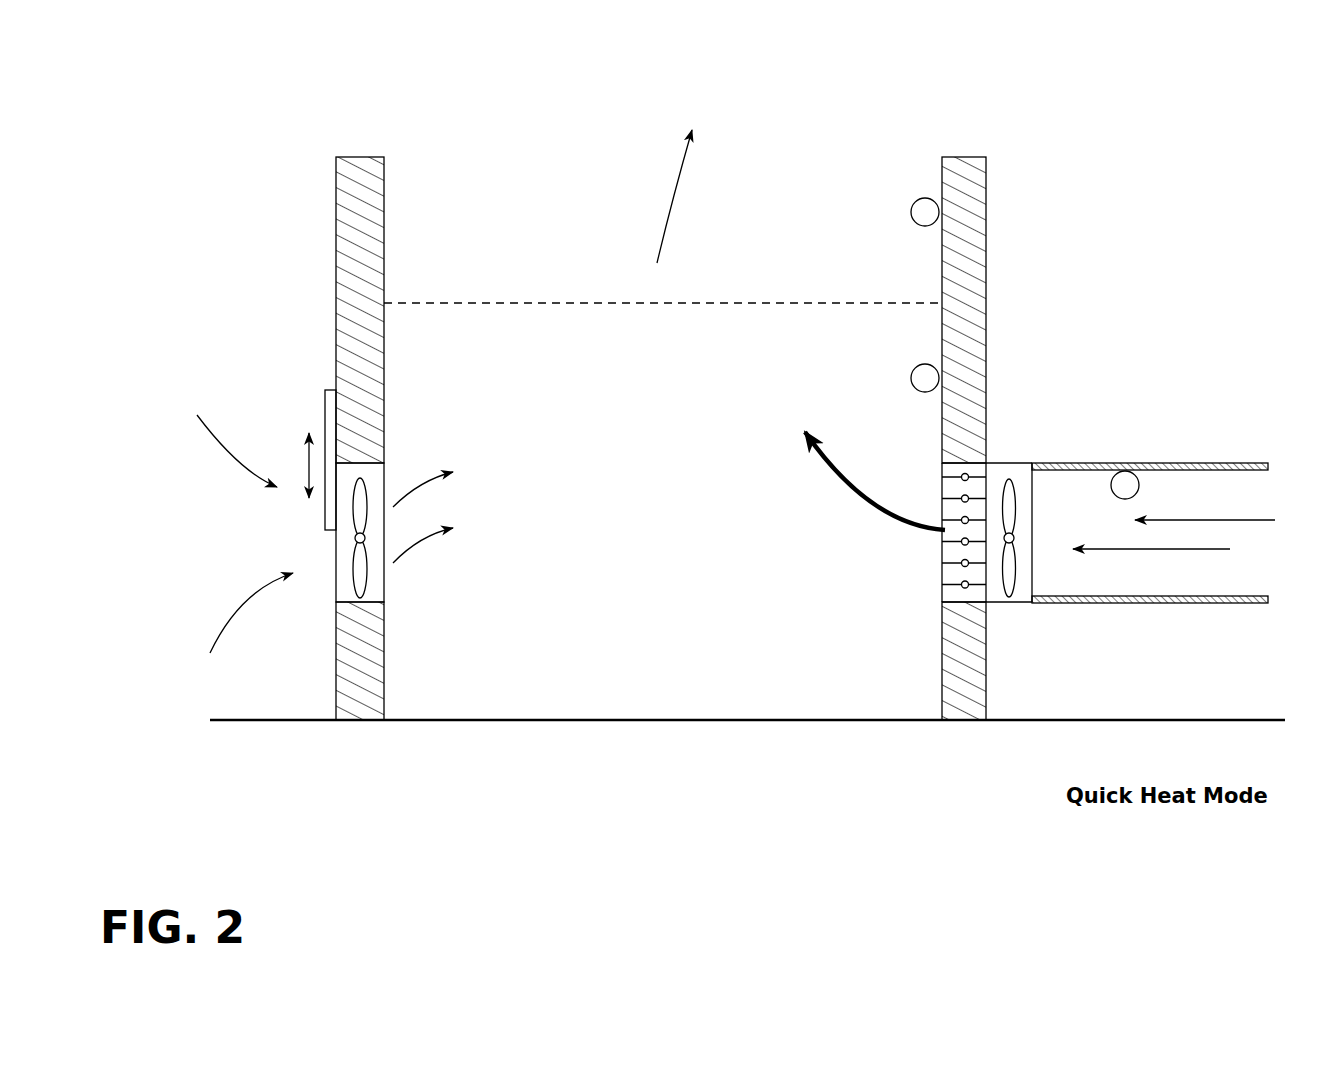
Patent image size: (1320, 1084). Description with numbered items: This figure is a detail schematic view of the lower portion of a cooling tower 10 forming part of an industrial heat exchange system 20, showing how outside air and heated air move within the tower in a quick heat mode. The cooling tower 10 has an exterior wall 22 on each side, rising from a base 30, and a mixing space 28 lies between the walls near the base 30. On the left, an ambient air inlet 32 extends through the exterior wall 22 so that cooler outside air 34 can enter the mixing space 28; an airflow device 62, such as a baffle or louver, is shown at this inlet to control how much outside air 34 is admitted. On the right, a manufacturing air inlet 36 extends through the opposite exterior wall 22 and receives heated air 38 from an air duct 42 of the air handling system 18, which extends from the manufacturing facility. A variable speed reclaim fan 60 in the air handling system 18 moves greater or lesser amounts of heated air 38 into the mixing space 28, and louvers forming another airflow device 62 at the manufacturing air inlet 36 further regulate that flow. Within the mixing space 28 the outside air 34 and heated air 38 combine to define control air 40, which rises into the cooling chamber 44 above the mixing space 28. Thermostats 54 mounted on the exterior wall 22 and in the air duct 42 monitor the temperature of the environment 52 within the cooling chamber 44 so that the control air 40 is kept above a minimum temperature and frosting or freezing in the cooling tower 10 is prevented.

The cooling tower 10 is at (295, 196).
The air handling system 18 is at (1138, 407).
The industrial heat exchange system 20 is at (1062, 263).
The exterior wall 22 is at (350, 304).
The mixing space 28 is at (517, 670).
The base 30 is at (962, 712).
The ambient air inlet 32 is at (320, 593).
The outside air 34 is at (232, 468).
The manufacturing air inlet 36 is at (942, 601).
The heated air 38 is at (1133, 553).
The control air 40 is at (688, 180).
The air duct 42 is at (1228, 463).
The cooling chamber 44 is at (787, 232).
The environment 52 is at (477, 233).
The thermostat 54 is at (935, 367).
The variable speed reclaim fan 60 is at (1006, 598).
The airflow devices 62 is at (330, 440).